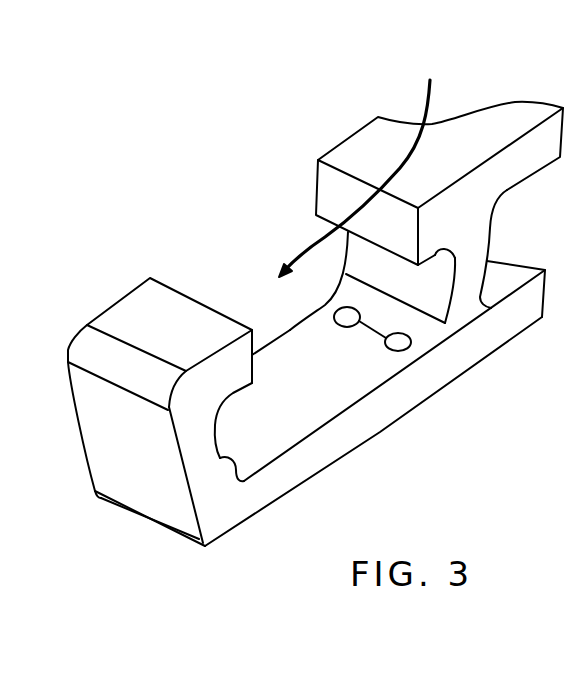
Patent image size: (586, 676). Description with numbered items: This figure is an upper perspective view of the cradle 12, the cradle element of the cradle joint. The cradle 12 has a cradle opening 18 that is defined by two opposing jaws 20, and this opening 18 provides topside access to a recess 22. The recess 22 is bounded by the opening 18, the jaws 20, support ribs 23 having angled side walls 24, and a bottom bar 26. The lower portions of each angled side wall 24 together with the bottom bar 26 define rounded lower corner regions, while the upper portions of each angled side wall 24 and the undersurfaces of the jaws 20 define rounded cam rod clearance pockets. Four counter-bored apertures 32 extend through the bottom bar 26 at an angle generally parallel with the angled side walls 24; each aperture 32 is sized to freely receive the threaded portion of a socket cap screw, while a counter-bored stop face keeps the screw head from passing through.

The cradle 12 is at (92, 470).
The cradle opening 18 is at (307, 153).
The jaws 20 is at (122, 300).
The recess 22 is at (363, 156).
The support ribs 23 is at (497, 238).
The angled side walls 24 is at (436, 287).
The bottom bar 26 is at (318, 393).
The counter-bored apertures 32 is at (385, 346).